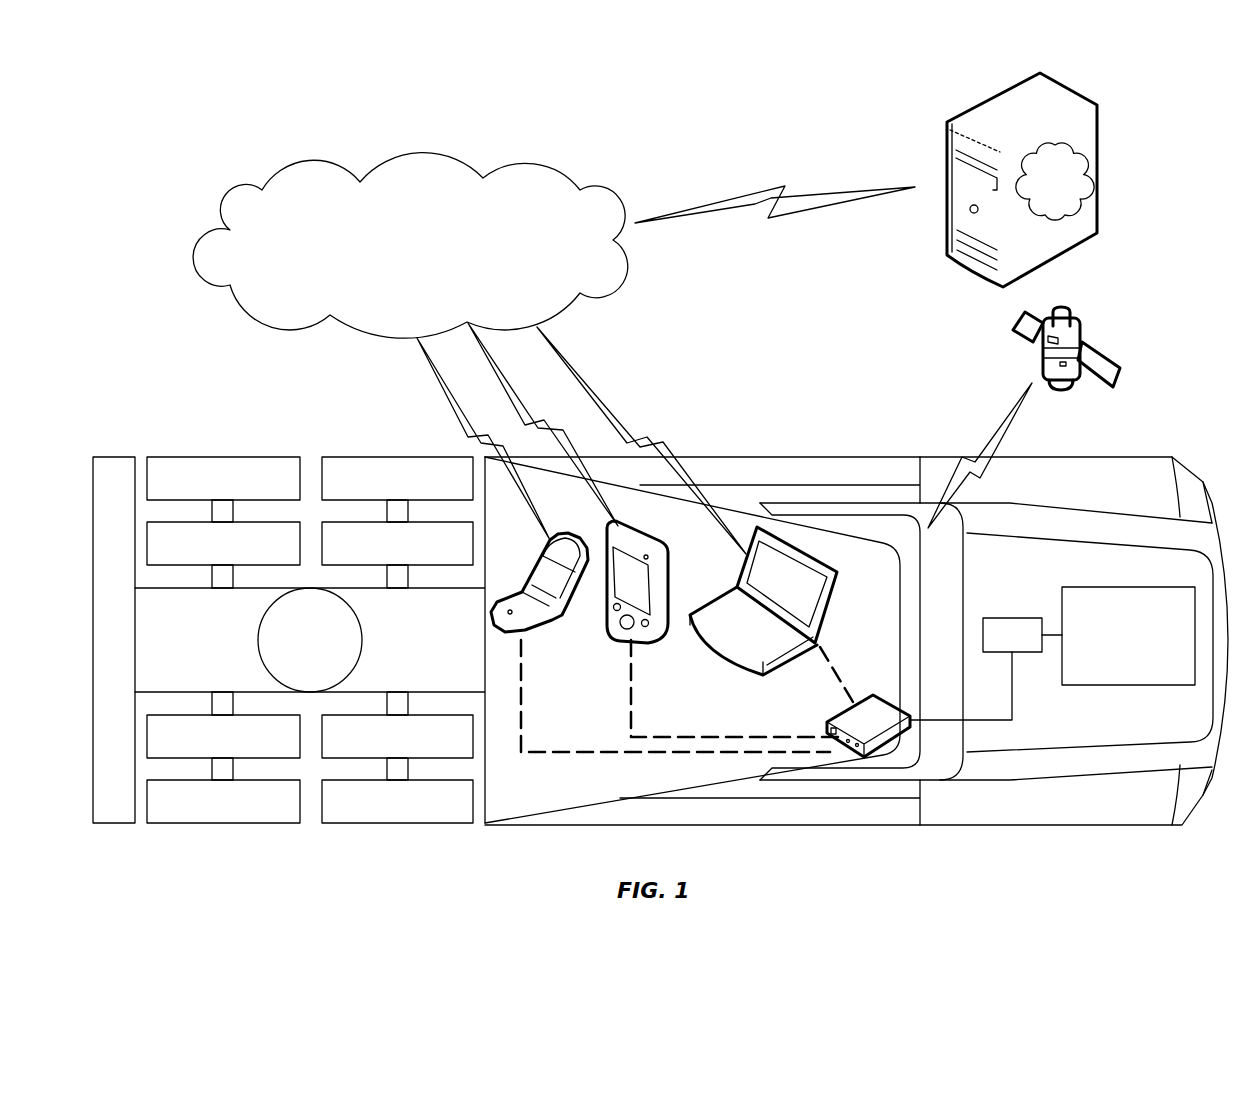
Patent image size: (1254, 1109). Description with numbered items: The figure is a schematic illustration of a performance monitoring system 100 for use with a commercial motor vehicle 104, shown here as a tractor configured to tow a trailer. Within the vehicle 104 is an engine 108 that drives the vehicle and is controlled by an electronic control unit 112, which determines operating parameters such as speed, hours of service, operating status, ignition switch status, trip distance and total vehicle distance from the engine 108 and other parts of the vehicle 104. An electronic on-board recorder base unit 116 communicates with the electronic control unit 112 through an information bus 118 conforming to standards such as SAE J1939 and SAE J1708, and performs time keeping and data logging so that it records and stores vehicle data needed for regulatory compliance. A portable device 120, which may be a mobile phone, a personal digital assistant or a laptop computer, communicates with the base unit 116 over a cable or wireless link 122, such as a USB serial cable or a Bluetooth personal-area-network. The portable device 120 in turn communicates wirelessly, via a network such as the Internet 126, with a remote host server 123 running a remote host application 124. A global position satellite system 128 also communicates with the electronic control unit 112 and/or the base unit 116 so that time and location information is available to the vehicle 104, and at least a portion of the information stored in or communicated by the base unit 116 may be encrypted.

The performance monitoring system 100 is at (1138, 214).
The commercial motor vehicle 104 is at (1118, 463).
The engine 108 is at (1127, 685).
The electronic control unit 112 is at (1028, 618).
The electronic on-board recorder base unit 116 is at (828, 715).
The information bus 118 is at (1012, 703).
The portable device 120 is at (552, 622).
The cable or wireless link 122 is at (668, 737).
The remote host server 123 is at (997, 148).
The remote host application 124 is at (1077, 153).
The Internet 126 is at (603, 297).
The global position satellite system 128 is at (1113, 347).